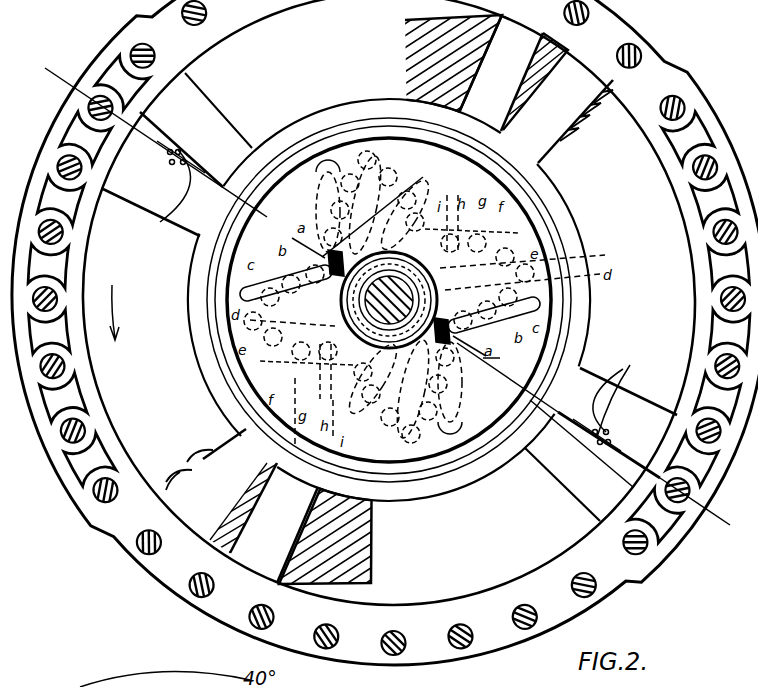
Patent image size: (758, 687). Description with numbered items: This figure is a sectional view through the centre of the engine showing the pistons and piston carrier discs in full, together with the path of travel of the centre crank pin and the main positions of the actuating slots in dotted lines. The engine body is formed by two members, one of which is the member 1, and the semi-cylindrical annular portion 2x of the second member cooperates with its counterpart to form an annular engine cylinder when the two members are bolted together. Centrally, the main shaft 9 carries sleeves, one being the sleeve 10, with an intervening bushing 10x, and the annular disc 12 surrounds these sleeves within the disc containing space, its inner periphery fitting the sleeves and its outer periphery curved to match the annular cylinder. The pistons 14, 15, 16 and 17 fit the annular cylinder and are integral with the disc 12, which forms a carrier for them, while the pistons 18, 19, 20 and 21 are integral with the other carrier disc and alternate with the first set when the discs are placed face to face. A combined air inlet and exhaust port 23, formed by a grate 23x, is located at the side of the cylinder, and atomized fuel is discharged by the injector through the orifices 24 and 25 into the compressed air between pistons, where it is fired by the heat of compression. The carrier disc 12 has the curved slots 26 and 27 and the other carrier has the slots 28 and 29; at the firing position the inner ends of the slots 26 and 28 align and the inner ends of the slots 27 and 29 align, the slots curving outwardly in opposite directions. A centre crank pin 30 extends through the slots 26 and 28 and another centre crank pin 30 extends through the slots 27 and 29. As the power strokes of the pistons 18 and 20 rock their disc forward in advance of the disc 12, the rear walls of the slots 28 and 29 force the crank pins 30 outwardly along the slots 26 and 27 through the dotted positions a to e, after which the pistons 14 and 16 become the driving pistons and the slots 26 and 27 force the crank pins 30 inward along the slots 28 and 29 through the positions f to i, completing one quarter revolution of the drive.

The engine body member 1 is at (384, 302).
The semi-cylindrical annular portion 2x is at (302, 41).
The main shaft 9 is at (392, 330).
The sleeve 10 is at (389, 254).
The bushing 10x is at (437, 289).
The annular disc 12 is at (323, 112).
The piston 14 is at (221, 133).
The piston 15 is at (230, 497).
The piston 16 is at (597, 454).
The piston 17 is at (575, 121).
The piston 18 is at (185, 188).
The piston 19 is at (294, 534).
The piston 20 is at (640, 427).
The piston 21 is at (501, 73).
The combined air inlet and exhaust port 23 is at (406, 24).
The grate 23x is at (388, 558).
The orifice 24 is at (178, 149).
The orifice 25 is at (553, 470).
The slot 26 is at (240, 290).
The slot 27 is at (543, 312).
The slot 28 is at (317, 193).
The slot 29 is at (540, 233).
The centre crank pin 30 is at (429, 268).